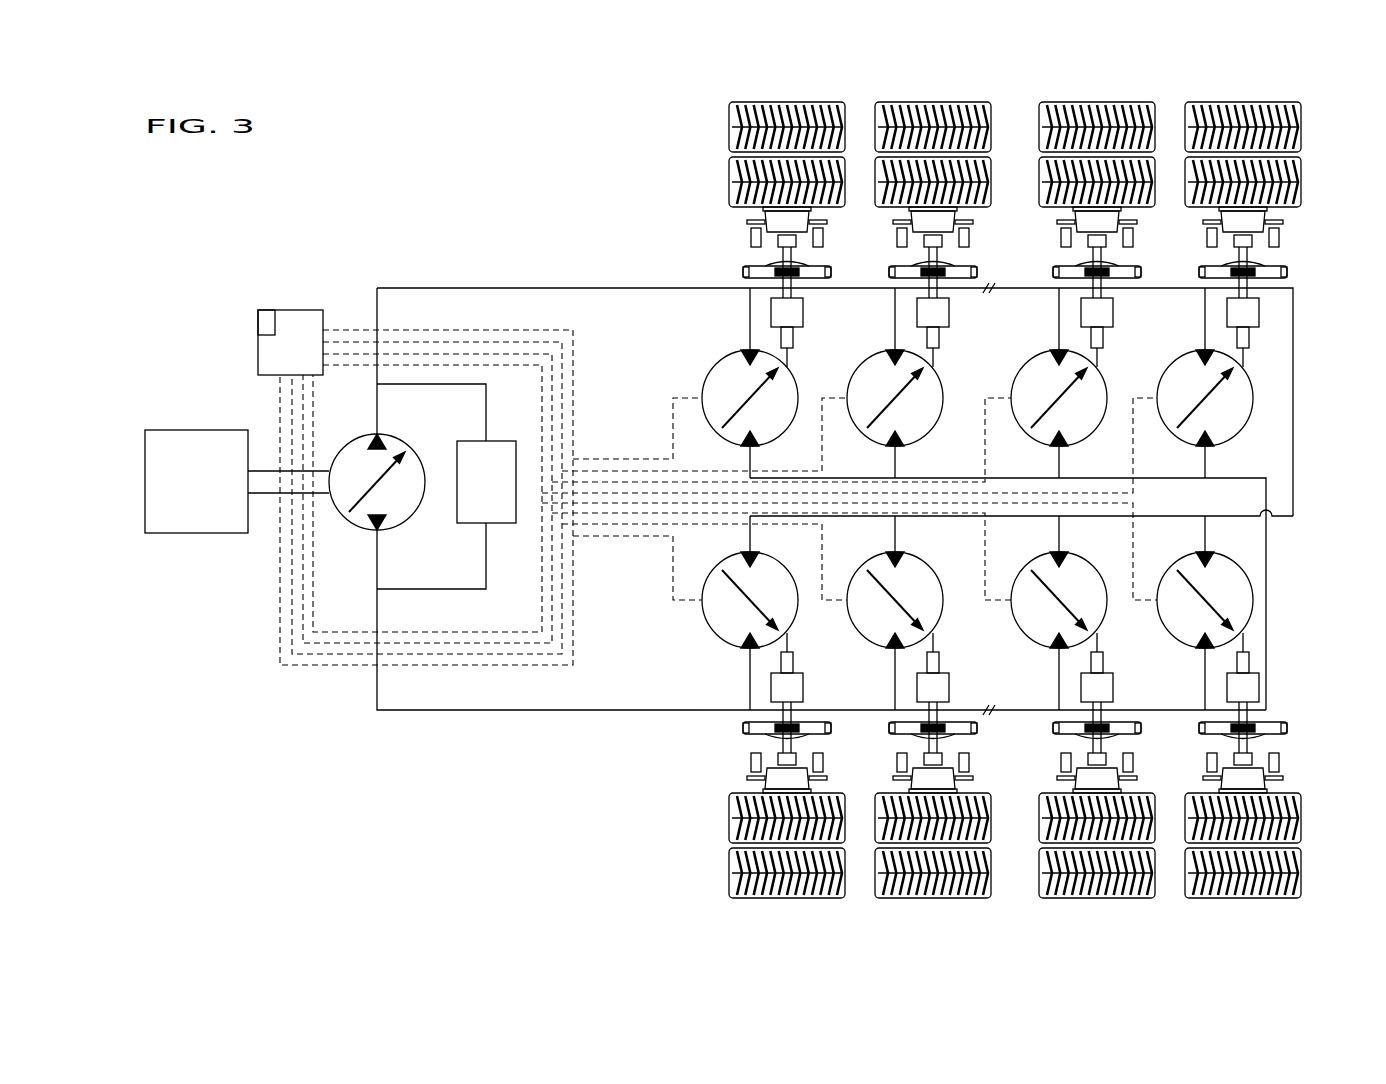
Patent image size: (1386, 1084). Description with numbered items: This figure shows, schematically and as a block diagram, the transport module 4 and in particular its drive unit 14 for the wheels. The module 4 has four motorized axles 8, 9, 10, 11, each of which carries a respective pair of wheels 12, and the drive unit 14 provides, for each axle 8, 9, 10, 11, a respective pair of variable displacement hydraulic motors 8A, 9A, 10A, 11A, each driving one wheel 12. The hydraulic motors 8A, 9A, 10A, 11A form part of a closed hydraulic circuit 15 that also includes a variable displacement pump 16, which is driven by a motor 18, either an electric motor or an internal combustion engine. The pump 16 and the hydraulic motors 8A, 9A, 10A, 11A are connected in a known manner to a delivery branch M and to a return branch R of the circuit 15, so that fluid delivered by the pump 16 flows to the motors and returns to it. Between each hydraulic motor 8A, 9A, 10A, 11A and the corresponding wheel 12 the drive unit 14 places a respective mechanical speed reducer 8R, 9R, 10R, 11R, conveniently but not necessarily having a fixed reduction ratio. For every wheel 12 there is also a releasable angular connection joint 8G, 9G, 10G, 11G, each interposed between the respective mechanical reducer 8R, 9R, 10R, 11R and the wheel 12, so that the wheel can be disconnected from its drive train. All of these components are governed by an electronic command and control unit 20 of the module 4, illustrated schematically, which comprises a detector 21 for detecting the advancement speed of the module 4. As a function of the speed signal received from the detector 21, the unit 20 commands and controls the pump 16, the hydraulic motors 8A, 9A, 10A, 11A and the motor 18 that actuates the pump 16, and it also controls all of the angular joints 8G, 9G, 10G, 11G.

The transport module 4 is at (835, 470).
The delivery branch M is at (530, 287).
The return branch R is at (612, 712).
The drive unit 14 is at (602, 682).
The closed hydraulic circuit 15 is at (520, 715).
The variable displacement pump 16 is at (393, 440).
The motor 18 is at (181, 437).
The electronic command and control unit 20 is at (298, 310).
The detector 21 is at (265, 323).
The motorized axle 8 is at (1237, 100).
The motorized axle 9 is at (1091, 100).
The motorized axle 10 is at (927, 100).
The motorized axle 11 is at (781, 100).
The wheel 12 is at (730, 116).
The variable displacement hydraulic motor 8A is at (1175, 380).
The variable displacement hydraulic motor 9A is at (1029, 380).
The variable displacement hydraulic motor 10A is at (865, 380).
The variable displacement hydraulic motor 11A is at (720, 380).
The releasable angular connection joint 8G is at (1218, 268).
The releasable angular connection joint 9G is at (1072, 268).
The releasable angular connection joint 10G is at (908, 268).
The releasable angular connection joint 11G is at (762, 268).
The mechanical speed reducer 8R is at (1253, 312).
The mechanical speed reducer 9R is at (1107, 312).
The mechanical speed reducer 10R is at (943, 312).
The mechanical speed reducer 11R is at (797, 312).